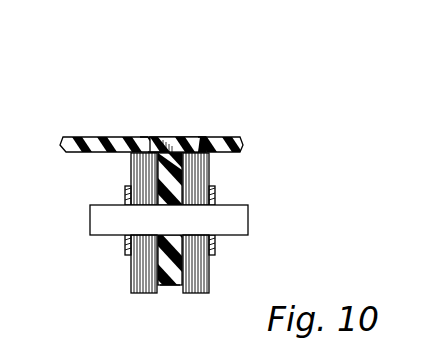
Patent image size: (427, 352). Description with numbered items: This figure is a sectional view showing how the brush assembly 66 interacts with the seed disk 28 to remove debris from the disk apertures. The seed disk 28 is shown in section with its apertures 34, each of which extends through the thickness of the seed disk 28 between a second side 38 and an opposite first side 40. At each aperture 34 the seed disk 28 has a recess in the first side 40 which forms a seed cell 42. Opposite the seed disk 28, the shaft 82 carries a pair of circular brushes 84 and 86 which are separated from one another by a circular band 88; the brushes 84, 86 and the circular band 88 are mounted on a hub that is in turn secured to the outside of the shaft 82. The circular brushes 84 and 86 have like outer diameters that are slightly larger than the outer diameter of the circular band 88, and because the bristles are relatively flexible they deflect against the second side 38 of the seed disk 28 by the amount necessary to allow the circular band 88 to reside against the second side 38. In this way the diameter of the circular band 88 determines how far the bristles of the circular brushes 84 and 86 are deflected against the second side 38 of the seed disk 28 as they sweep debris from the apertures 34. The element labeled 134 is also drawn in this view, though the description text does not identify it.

The seed disk 28 is at (142, 156).
The apertures 34 is at (148, 137).
The second side 38 is at (237, 154).
The first side 40 is at (168, 137).
The seed cell 42 is at (140, 137).
The brush assembly 66 is at (56, 216).
The shaft 82 is at (249, 219).
The circular brush 84 is at (137, 292).
The circular brush 86 is at (197, 294).
The circular band 88 is at (175, 286).
The sleeve 134 is at (215, 194).